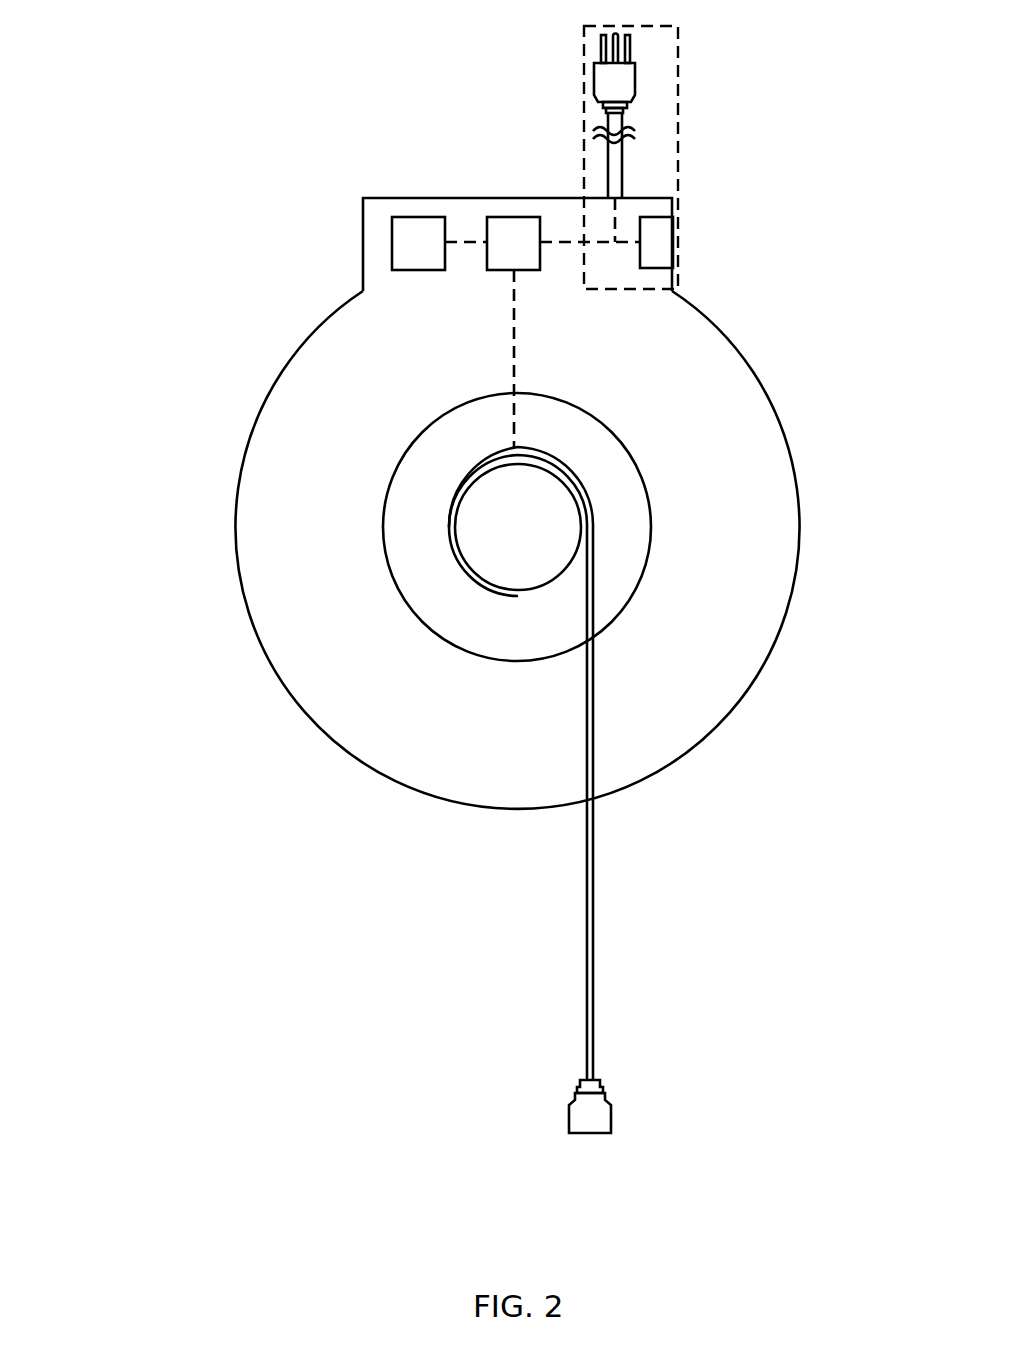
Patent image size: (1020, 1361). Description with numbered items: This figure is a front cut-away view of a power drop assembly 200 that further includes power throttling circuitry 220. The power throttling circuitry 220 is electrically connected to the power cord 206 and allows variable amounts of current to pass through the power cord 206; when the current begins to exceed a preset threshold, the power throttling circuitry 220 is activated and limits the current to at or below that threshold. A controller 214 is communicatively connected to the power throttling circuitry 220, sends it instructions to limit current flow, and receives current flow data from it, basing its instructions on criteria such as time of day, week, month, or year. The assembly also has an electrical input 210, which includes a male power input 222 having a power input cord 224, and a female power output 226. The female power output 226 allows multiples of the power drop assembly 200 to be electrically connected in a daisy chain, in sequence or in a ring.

The power drop assembly 200 is at (188, 64).
The power cord 206 is at (595, 940).
The electrical input 210 is at (678, 165).
The controller 214 is at (428, 270).
The power throttling circuitry 220 is at (527, 270).
The male power input 222 is at (594, 83).
The power input cord 224 is at (607, 177).
The female power output 226 is at (660, 255).